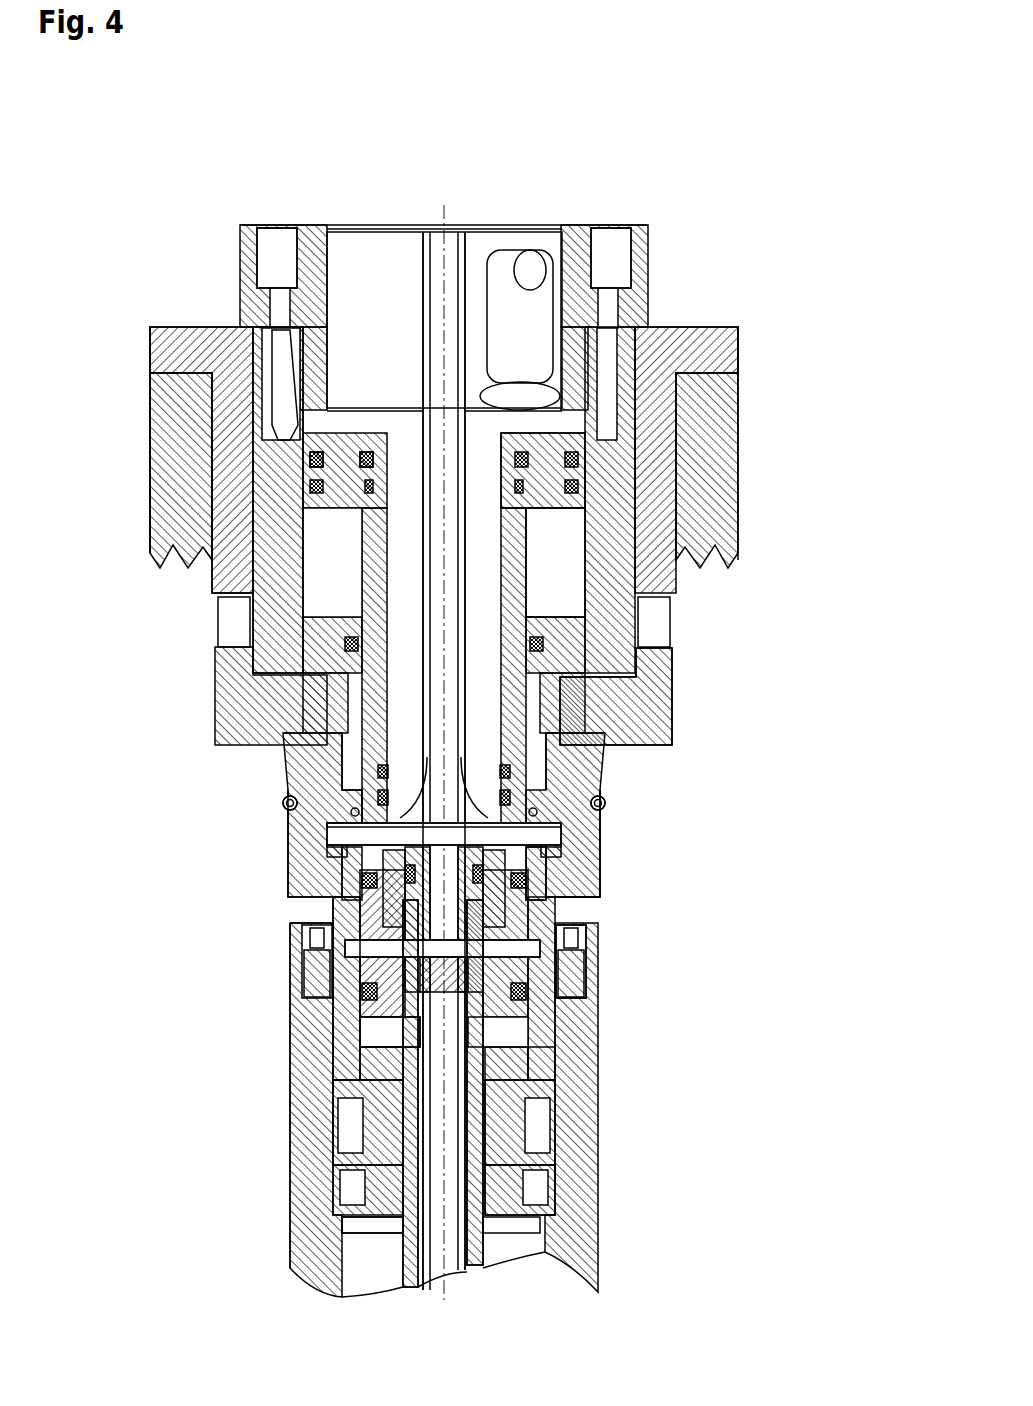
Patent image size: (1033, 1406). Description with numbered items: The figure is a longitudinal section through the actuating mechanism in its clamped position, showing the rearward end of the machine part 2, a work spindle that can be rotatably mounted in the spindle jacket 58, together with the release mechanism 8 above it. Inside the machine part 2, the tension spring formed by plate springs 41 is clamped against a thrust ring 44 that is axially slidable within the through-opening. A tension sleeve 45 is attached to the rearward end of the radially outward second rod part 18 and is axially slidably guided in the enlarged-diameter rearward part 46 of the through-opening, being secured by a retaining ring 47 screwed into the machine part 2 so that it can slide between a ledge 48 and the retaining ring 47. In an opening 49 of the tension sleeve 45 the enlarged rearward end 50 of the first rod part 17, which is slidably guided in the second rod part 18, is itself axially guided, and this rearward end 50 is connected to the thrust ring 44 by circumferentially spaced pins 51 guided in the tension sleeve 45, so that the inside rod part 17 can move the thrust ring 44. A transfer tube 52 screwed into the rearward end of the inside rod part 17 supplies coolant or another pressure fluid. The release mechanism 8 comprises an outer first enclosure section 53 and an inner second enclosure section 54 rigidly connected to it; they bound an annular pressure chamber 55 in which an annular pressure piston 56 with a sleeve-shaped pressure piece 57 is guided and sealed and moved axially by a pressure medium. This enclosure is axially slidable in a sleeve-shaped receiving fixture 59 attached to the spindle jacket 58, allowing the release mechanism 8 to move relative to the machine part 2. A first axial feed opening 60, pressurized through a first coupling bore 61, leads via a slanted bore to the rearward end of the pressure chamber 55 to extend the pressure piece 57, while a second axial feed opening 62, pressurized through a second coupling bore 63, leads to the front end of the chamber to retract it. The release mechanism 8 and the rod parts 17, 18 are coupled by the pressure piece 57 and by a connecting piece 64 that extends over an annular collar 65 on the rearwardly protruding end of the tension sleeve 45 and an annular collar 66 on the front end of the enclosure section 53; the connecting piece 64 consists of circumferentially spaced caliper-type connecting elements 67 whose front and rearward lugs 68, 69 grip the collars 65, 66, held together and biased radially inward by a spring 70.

The machine part 2 is at (310, 1150).
The release mechanism 8 is at (706, 615).
The first rod part 17 is at (413, 1245).
The second rod part 18 is at (480, 1247).
The plate springs 41 is at (345, 1222).
The thrust ring 44 is at (508, 1195).
The tension sleeve 45 is at (380, 1110).
The rearward part of the through-opening 46 is at (325, 1008).
The retaining ring 47 is at (545, 965).
The ledge 48 is at (535, 1077).
The opening of the tension sleeve 49 is at (380, 1030).
The rearward end of the first rod part 50 is at (395, 980).
The pins 51 is at (505, 1133).
The transfer tube 52 is at (430, 740).
The first enclosure section 53 is at (290, 648).
The second enclosure section 54 is at (563, 420).
The annular pressure chamber 55 is at (560, 543).
The pressure piston 56 is at (350, 482).
The pressure piece 57 is at (518, 706).
The spindle jacket 58 is at (190, 527).
The receiving fixture 59 is at (208, 350).
The first axial feed opening 60 is at (283, 410).
The first coupling bore 61 is at (271, 254).
The second axial feed opening 62 is at (608, 470).
The second coupling bore 63 is at (612, 252).
The connecting piece 64 is at (272, 845).
The annular collar on the tension sleeve 65 is at (338, 858).
The annular collar on the enclosure section 66 is at (335, 798).
The caliper-type connecting elements 67 is at (575, 842).
The front lug 68 is at (547, 887).
The rearward lug 69 is at (555, 783).
The spring 70 is at (282, 803).